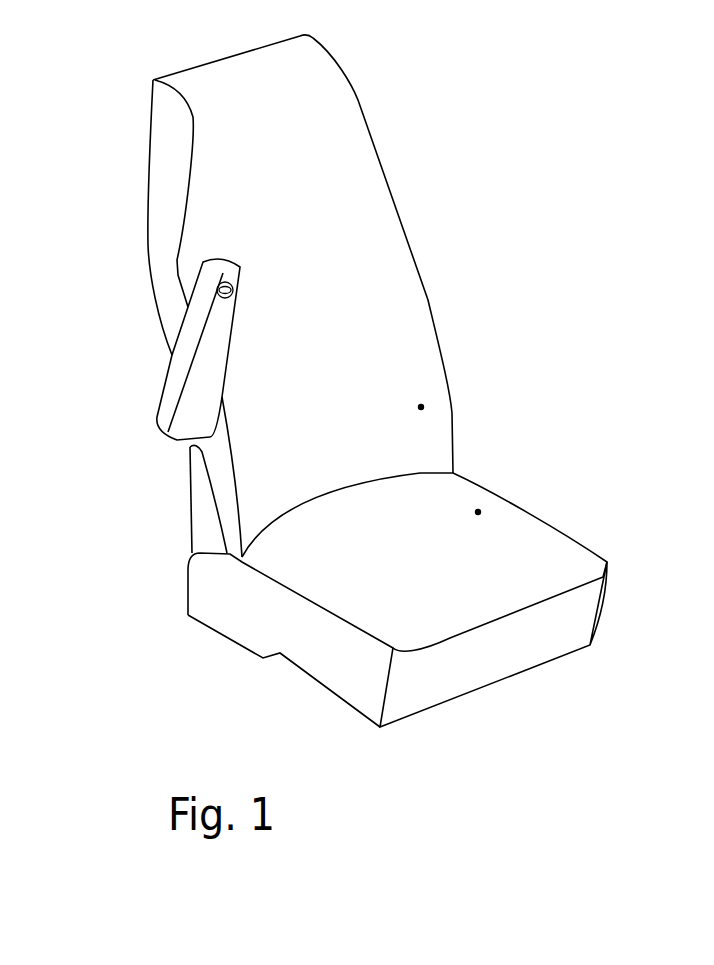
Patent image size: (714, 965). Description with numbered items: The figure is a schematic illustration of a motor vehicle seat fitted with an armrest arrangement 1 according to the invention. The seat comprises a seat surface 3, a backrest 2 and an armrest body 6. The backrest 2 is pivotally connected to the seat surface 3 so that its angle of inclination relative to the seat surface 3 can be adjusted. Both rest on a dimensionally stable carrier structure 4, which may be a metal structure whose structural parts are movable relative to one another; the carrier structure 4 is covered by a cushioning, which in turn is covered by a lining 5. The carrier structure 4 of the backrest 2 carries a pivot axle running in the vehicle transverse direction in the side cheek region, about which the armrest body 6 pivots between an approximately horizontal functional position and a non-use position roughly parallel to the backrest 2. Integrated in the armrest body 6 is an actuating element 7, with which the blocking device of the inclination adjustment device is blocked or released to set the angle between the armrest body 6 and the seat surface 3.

The armrest arrangement 1 is at (135, 295).
The backrest 2 is at (325, 201).
The seat surface 3 is at (527, 568).
The carrier structure 4 is at (180, 457).
The lining 5 is at (421, 407).
The armrest body 6 is at (180, 362).
The actuating element 7 is at (215, 293).